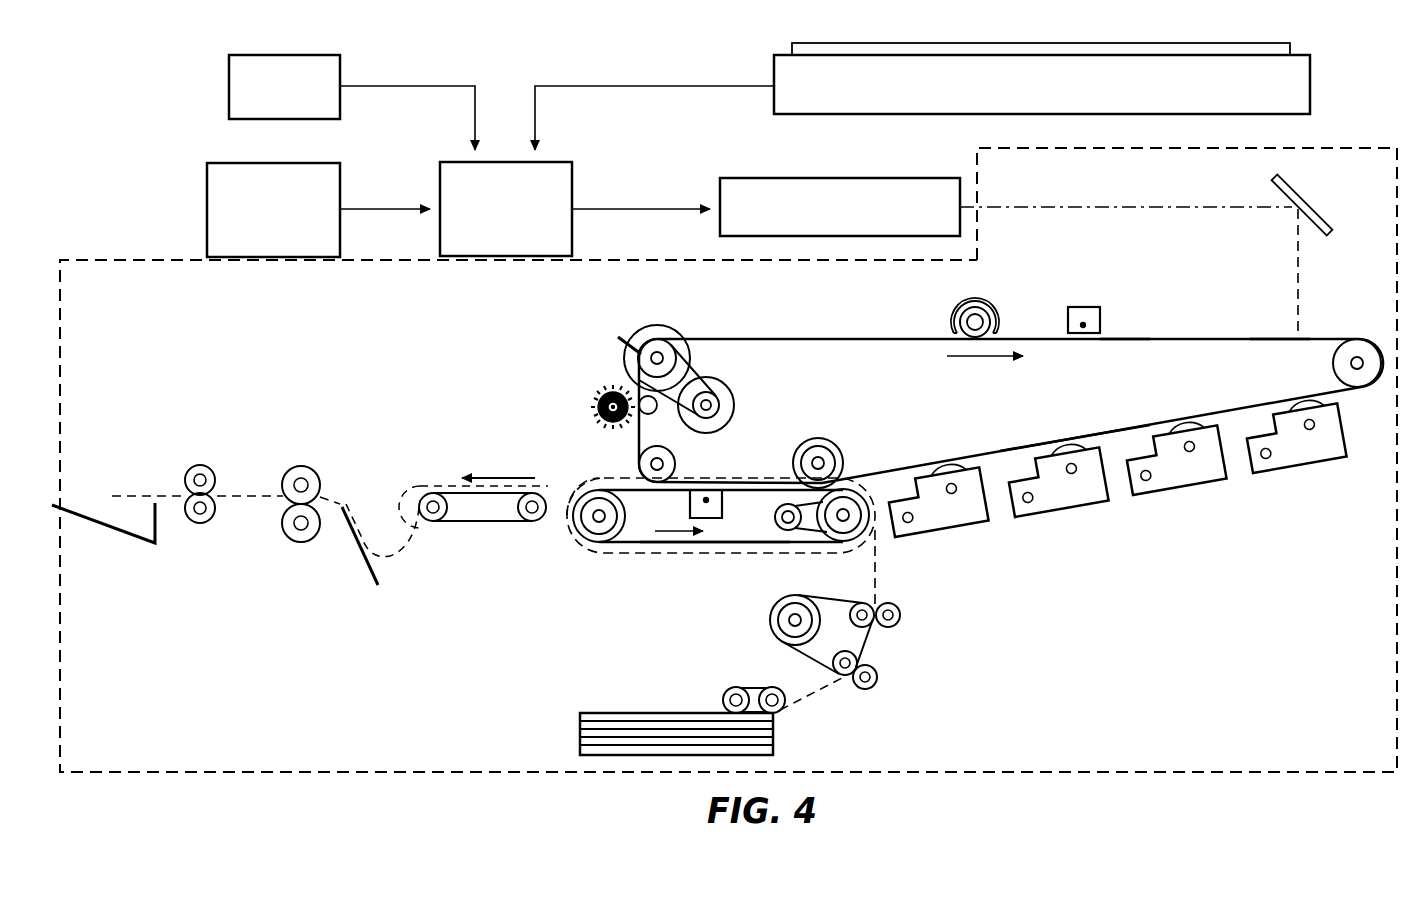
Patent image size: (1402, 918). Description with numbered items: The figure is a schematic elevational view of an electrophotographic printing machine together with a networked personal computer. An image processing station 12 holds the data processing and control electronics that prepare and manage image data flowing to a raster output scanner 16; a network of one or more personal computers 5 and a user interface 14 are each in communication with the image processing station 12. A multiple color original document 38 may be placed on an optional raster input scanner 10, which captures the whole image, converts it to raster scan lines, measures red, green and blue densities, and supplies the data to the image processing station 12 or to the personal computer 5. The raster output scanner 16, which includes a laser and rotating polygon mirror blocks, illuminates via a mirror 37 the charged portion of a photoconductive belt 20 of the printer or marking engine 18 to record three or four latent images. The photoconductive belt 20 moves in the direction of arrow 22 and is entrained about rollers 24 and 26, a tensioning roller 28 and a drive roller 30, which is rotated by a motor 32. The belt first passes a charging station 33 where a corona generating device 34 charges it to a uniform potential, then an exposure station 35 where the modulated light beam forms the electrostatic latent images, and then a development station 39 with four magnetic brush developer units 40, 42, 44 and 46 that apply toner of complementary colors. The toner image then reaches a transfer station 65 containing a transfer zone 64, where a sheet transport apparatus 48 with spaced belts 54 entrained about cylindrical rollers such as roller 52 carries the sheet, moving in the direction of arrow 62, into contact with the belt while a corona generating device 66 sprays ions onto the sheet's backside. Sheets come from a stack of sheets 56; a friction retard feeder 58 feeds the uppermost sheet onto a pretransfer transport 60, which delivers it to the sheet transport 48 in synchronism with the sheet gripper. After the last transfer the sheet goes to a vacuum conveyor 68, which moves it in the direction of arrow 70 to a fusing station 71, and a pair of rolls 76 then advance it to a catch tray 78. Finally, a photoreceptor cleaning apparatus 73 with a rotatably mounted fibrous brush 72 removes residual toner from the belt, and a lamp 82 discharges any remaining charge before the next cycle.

The personal computer 5 is at (222, 90).
The raster input scanner 10 is at (770, 44).
The image processing station 12 is at (555, 143).
The user interface 14 is at (196, 193).
The raster output scanner 16 is at (874, 150).
The printer or marking engine 18 is at (1338, 121).
The photoconductive belt 20 is at (1213, 336).
The arrow 22 is at (975, 358).
The roller 24 is at (672, 466).
The roller 26 is at (847, 463).
The tensioning roller 28 is at (1372, 340).
The drive roller 30 is at (655, 328).
The motor 32 is at (727, 395).
The charging station 33 is at (1119, 330).
The corona generating device 34 is at (1085, 306).
The exposure station 35 is at (1280, 331).
The mirror 37 is at (1293, 187).
The original document 38 is at (1183, 40).
The development station 39 is at (1172, 600).
The developer unit 40 is at (1292, 458).
The developer unit 42 is at (1178, 480).
The developer unit 44 is at (1058, 500).
The developer unit 46 is at (943, 526).
The sheet transport apparatus 48 is at (618, 566).
The roller 52 is at (851, 547).
The belts 54 is at (745, 547).
The stack of sheets 56 is at (622, 712).
The friction retard feeder 58 is at (768, 688).
The pretransfer transport 60 is at (872, 640).
The arrow 62 is at (684, 546).
The transfer zone 64 is at (715, 476).
The transfer station 65 is at (731, 500).
The corona generating device 66 is at (688, 494).
The vacuum conveyor 68 is at (492, 524).
The arrow 70 is at (503, 476).
The fusing station 71 is at (322, 440).
The fibrous brush 72 is at (594, 405).
The photoreceptor cleaning apparatus 73 is at (593, 378).
The rolls 76 is at (200, 478).
The catch tray 78 is at (126, 535).
The lamp 82 is at (985, 297).